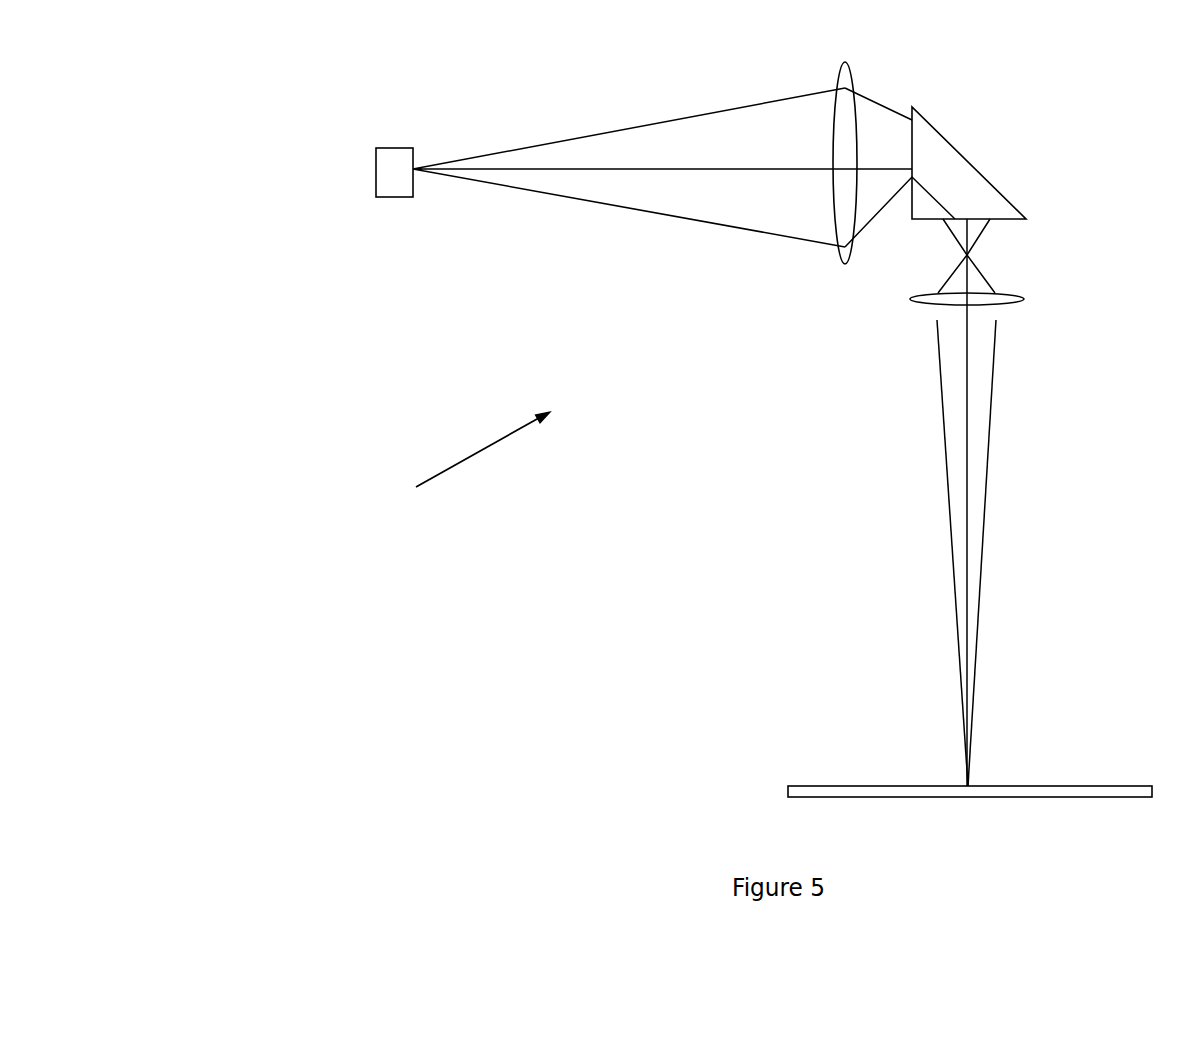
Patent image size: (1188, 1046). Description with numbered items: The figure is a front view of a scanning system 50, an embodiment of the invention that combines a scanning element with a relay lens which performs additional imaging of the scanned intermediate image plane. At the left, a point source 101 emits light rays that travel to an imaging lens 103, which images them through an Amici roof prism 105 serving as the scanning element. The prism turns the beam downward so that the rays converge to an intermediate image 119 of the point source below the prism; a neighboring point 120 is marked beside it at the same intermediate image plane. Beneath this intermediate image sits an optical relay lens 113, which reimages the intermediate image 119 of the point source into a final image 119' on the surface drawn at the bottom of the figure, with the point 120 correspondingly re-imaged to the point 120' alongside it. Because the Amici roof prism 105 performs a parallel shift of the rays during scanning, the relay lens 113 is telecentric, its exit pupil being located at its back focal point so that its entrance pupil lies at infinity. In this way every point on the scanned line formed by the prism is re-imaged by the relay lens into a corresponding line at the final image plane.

The scanning system 50 is at (401, 492).
The point source 101 is at (376, 163).
The imaging lens 103 is at (852, 84).
The Amici roof prism 105 is at (940, 134).
The optical relay lens 113 is at (910, 299).
The intermediate image 119 is at (1020, 252).
The second beam focus point 120 is at (1034, 256).
The final image 119' is at (996, 553).
The second beam image on surface 120' is at (921, 553).